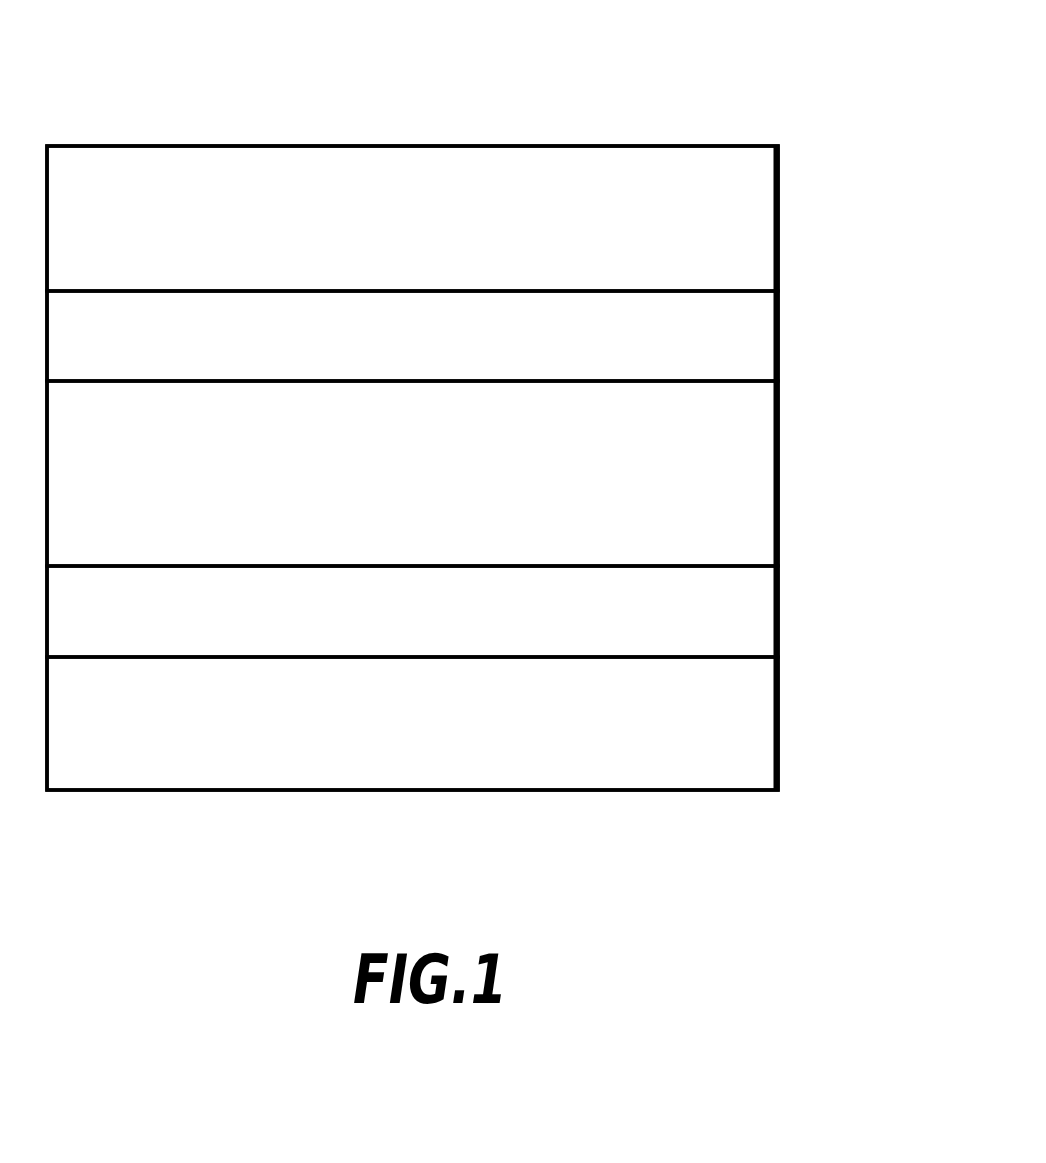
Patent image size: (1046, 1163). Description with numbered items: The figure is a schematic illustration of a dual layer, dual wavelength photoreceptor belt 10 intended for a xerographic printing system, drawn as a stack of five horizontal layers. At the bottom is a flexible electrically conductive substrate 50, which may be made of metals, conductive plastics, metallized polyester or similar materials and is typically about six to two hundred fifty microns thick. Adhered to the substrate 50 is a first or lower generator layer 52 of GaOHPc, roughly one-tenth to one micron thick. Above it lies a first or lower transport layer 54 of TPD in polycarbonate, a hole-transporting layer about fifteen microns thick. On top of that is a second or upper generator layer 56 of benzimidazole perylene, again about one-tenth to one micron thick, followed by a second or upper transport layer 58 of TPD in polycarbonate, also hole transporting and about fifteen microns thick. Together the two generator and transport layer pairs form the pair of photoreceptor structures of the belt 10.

The photoreceptor belt 10 is at (777, 110).
The electrically conductive substrate 50 is at (755, 757).
The first or lower generator layer 52 is at (760, 628).
The first or lower transport layer 54 is at (765, 495).
The second or upper generator layer 56 is at (765, 360).
The second or upper transport layer 58 is at (765, 247).